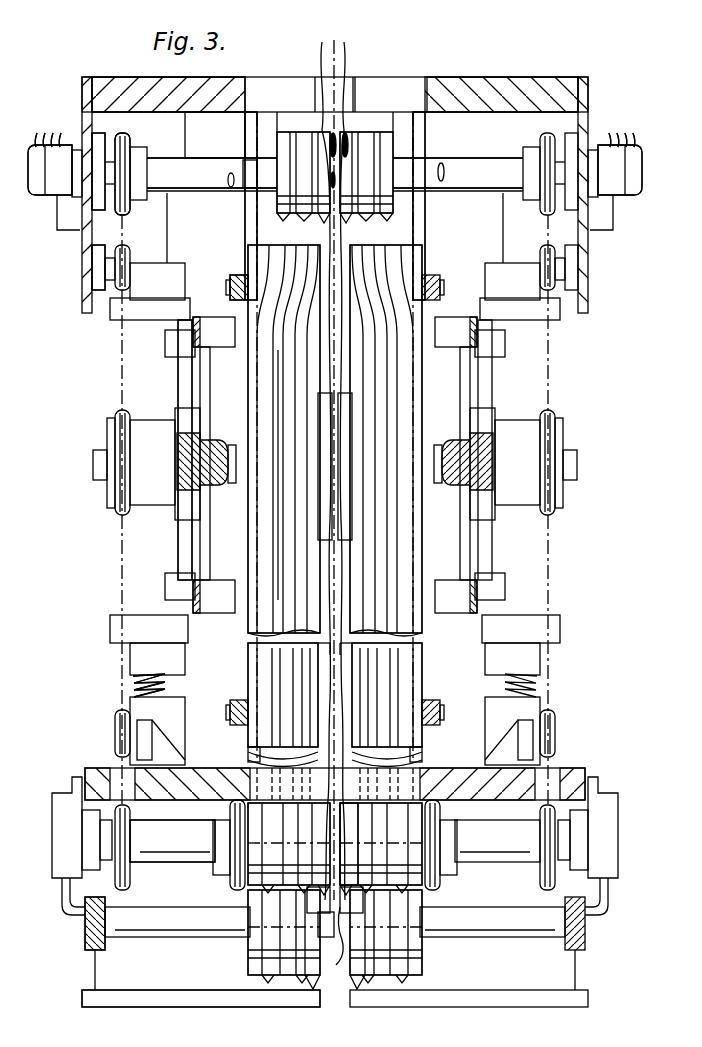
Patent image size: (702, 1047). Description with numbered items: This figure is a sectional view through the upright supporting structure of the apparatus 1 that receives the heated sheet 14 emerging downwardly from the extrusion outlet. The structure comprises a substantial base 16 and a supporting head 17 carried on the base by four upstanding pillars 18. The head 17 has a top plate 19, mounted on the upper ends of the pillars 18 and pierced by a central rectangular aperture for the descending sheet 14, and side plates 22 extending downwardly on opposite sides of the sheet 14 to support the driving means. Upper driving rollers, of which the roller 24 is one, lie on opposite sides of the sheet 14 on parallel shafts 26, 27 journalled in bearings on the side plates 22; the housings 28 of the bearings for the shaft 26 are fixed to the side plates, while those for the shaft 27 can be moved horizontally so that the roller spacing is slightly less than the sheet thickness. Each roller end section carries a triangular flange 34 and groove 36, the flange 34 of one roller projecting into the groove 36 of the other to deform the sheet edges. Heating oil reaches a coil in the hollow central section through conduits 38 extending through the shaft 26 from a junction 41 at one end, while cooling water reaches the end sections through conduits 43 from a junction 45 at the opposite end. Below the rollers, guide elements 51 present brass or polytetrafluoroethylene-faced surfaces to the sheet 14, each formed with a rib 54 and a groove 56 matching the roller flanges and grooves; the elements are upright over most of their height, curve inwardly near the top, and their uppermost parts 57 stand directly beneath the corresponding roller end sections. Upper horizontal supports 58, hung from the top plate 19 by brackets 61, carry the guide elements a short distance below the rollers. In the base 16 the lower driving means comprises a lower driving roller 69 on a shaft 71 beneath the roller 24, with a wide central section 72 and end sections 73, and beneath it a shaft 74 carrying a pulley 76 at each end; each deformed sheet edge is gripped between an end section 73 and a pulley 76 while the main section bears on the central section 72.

The machine frame 1 is at (190, 369).
The heated sheet 14 is at (330, 40).
The base 16 is at (118, 958).
The supporting head 17 is at (143, 117).
The upstanding pillars 18 is at (135, 680).
The top plate 19 is at (215, 135).
The side plates 22 is at (90, 257).
The upper driving roller 24 is at (357, 185).
The shaft 26 is at (172, 178).
The shaft 27 is at (247, 178).
The bearing housings 28 is at (98, 200).
The flange 34 is at (349, 125).
The groove 36 is at (290, 130).
The conduits 38 is at (58, 130).
The junction 41 is at (58, 172).
The conduits 43 is at (616, 130).
The junction 45 is at (617, 178).
The guide element 51 is at (256, 663).
The rib 54 is at (320, 252).
The groove 56 is at (277, 349).
The uppermost part 57 is at (352, 260).
The upper horizontal supports 58 is at (240, 286).
The brackets 61 is at (245, 143).
The lower driving roller 69 is at (333, 914).
The shaft 71 is at (190, 842).
The central section 72 is at (350, 816).
The end sections 73 is at (272, 850).
The shaft 74 is at (338, 942).
The pulley 76 is at (258, 916).